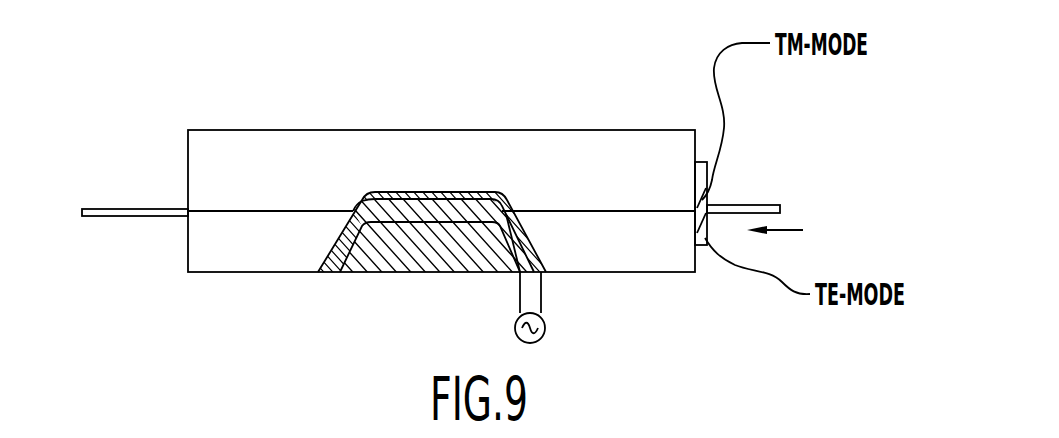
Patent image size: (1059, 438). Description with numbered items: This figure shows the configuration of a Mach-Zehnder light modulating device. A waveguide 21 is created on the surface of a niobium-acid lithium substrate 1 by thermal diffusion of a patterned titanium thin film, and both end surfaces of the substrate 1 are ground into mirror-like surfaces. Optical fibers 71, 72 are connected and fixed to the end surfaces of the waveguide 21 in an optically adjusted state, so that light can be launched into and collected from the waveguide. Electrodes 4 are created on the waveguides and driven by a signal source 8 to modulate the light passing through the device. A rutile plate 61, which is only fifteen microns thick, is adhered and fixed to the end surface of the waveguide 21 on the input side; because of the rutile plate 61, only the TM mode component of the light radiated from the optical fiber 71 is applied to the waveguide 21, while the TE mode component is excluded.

The niobium-acid lithium substrate 1 is at (235, 130).
The waveguide 21 is at (324, 210).
The electrode structure 4 is at (473, 192).
The signal source 8 is at (545, 333).
The optical fiber 72 is at (153, 209).
The optical fiber 71 is at (764, 205).
The rutile plate 61 is at (701, 246).